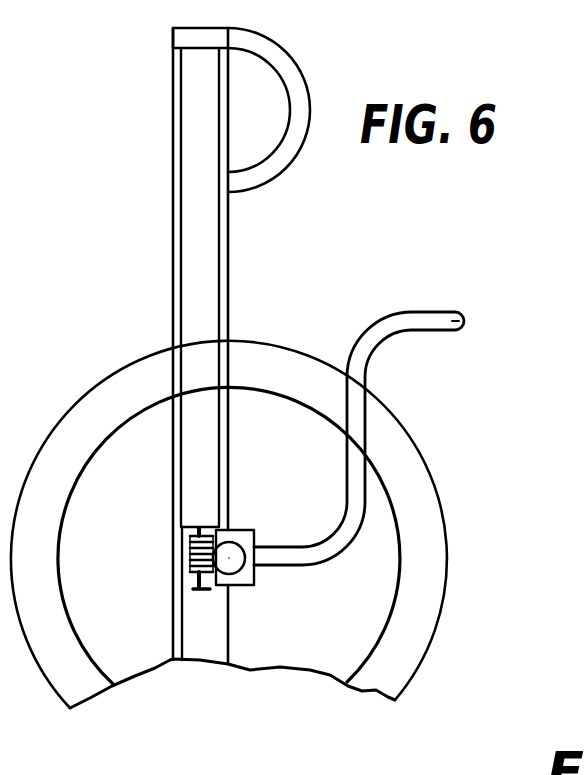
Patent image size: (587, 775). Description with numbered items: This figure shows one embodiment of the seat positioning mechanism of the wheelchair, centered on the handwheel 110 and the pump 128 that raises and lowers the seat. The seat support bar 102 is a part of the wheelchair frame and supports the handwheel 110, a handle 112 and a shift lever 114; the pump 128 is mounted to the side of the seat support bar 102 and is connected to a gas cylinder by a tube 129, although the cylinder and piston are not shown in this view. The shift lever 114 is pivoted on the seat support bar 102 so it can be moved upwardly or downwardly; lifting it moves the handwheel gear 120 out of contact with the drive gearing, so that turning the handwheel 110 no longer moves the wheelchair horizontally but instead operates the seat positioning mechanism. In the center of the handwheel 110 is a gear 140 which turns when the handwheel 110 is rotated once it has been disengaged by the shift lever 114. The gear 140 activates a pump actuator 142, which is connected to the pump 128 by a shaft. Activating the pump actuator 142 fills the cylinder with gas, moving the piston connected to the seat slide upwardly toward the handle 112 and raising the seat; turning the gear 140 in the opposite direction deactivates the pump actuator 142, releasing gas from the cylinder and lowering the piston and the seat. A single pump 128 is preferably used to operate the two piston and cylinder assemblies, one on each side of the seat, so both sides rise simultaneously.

The seat support bar 102 is at (172, 208).
The handwheel 110 is at (437, 565).
The handle 112 is at (290, 70).
The shift lever 114 is at (460, 320).
The handwheel gear 120 is at (393, 600).
The pump 128 is at (210, 234).
The tube 129 is at (181, 605).
The gear 140 is at (238, 548).
The pump actuator 142 is at (188, 548).